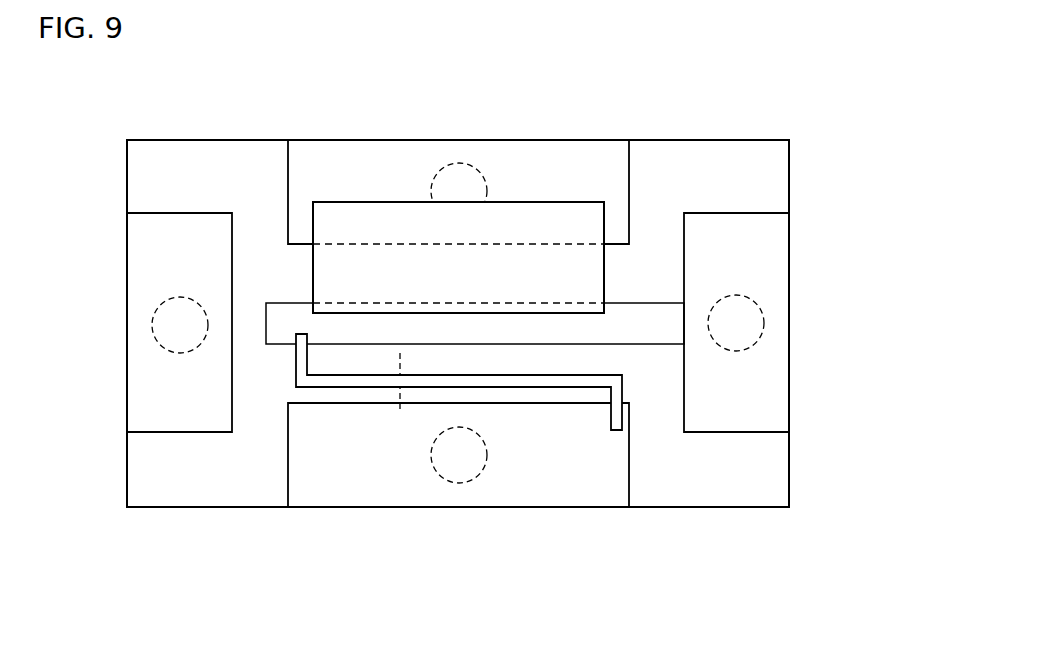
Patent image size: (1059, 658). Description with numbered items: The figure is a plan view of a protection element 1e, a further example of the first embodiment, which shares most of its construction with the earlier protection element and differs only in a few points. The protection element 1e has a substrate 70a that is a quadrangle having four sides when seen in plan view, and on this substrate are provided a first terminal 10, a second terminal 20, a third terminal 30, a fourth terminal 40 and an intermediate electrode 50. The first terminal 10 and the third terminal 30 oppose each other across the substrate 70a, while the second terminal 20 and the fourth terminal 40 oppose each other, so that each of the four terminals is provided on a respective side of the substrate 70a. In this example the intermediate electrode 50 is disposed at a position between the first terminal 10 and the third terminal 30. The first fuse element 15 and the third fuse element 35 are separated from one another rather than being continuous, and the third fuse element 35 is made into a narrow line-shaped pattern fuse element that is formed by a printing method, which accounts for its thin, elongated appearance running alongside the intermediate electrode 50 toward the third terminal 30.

The protection element 1e is at (777, 102).
The first terminal 10 is at (300, 138).
The first fuse element 15 is at (578, 223).
The second terminal 20 is at (790, 250).
The third terminal 30 is at (507, 510).
The third fuse element 35 is at (338, 383).
The fourth terminal 40 is at (125, 395).
The intermediate electrode 50 is at (655, 332).
The substrate 70a is at (777, 176).